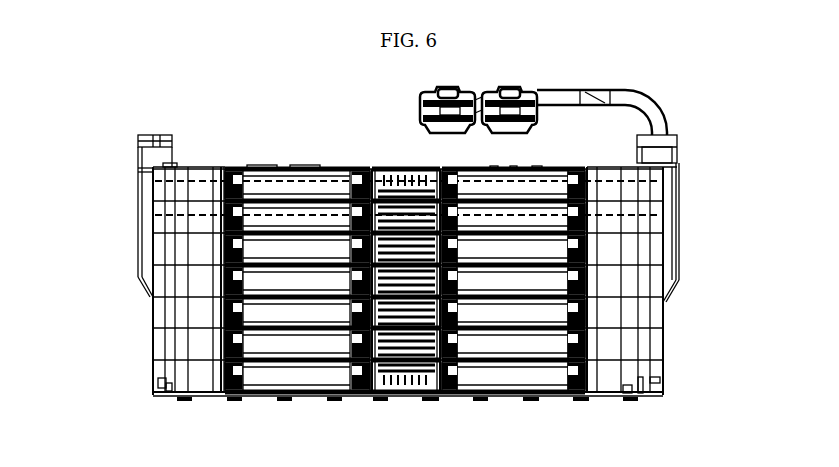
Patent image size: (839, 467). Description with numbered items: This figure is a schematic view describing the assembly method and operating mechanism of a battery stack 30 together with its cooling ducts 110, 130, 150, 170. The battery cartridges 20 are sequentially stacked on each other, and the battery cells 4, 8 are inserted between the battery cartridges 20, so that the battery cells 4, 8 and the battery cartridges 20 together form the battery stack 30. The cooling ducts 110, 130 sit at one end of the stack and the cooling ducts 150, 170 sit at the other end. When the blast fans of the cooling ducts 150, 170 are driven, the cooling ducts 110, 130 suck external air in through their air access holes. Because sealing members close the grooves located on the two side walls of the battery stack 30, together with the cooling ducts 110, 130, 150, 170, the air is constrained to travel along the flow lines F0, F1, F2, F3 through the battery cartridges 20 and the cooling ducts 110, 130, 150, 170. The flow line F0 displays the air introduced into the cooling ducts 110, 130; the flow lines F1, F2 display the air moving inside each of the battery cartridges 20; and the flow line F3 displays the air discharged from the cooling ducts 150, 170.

The cooling duct 110 is at (122, 265).
The cooling duct 130 is at (138, 212).
The cooling duct 150 is at (692, 265).
The cooling duct 170 is at (680, 200).
The battery cell 4 is at (513, 303).
The battery cell 8 is at (510, 380).
The battery stack 30 is at (408, 304).
The battery cartridge 20 is at (610, 385).
The flow line F0 is at (128, 155).
The flow line F1 is at (206, 181).
The flow line F2 is at (284, 215).
The flow line F3 is at (657, 215).